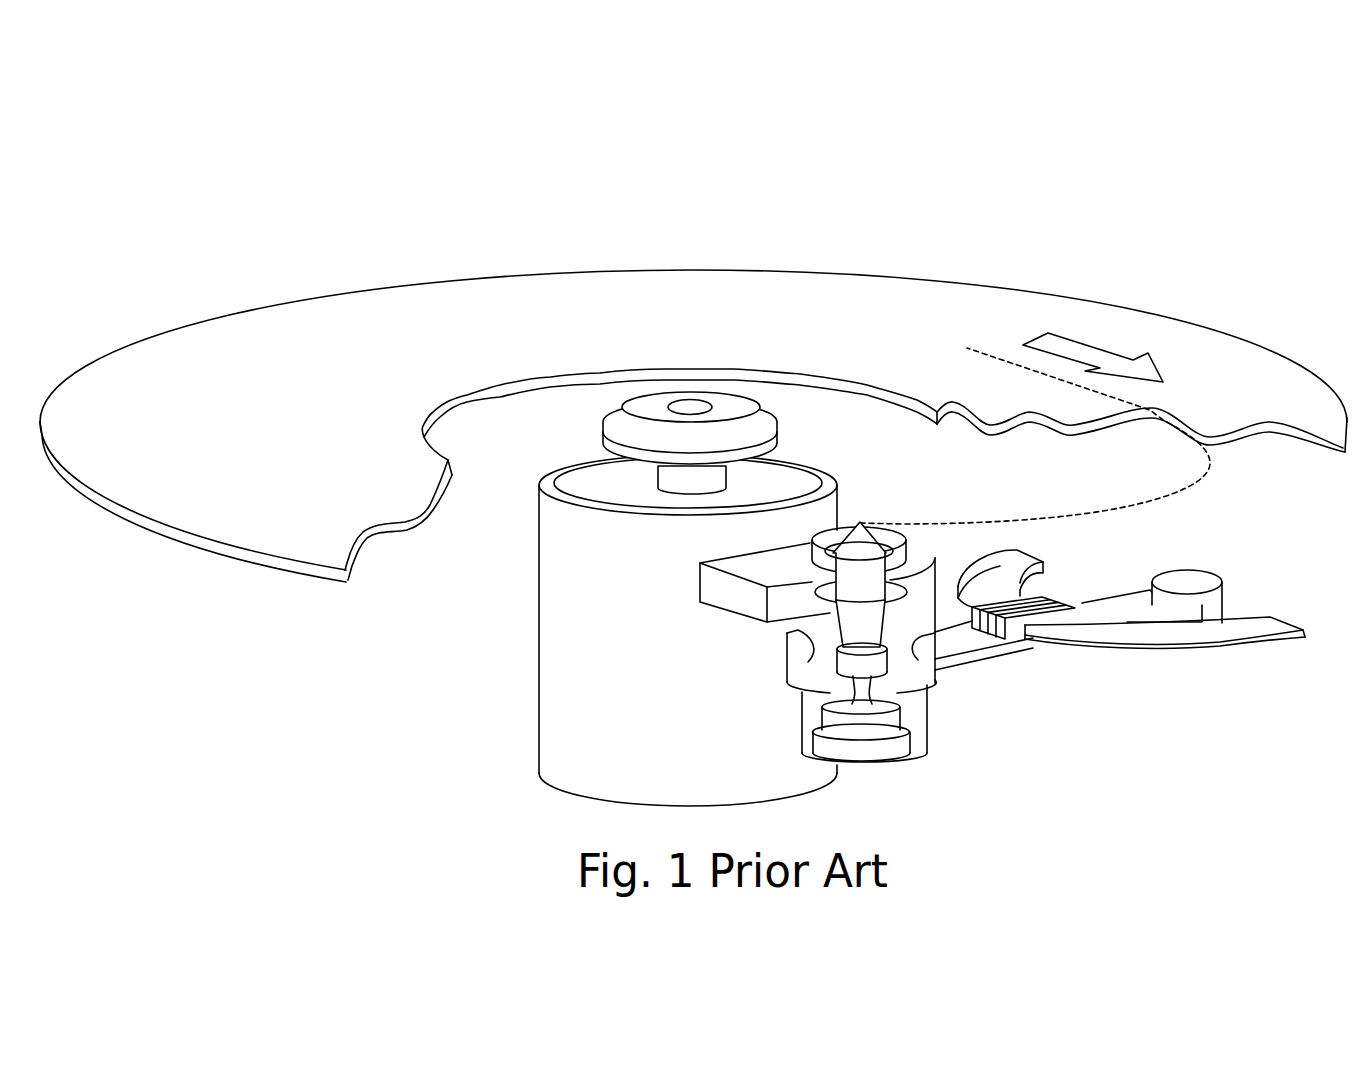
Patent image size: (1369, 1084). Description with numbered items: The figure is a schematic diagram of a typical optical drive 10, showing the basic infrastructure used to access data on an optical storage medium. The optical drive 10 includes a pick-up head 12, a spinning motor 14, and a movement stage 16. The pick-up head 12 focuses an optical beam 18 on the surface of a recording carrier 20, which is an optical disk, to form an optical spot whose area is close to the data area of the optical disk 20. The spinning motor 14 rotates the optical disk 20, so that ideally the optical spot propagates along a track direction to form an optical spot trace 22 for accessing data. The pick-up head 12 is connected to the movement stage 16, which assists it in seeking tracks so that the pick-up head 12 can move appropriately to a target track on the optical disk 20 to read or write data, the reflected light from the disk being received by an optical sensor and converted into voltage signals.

The optical drive 10 is at (1198, 182).
The pick-up head 12 is at (927, 727).
The spinning motor 14 is at (539, 727).
The movement stage 16 is at (1025, 652).
The optical beam 18 is at (787, 660).
The recording carrier 20 is at (1213, 333).
The optical spot trace 22 is at (1193, 490).